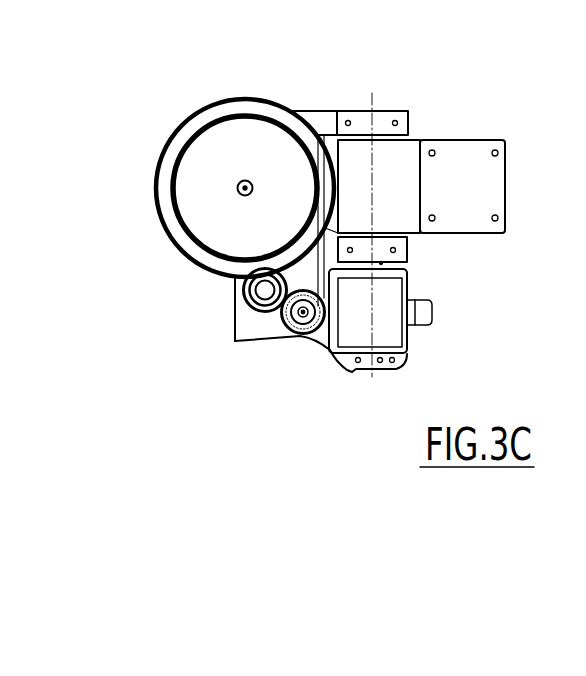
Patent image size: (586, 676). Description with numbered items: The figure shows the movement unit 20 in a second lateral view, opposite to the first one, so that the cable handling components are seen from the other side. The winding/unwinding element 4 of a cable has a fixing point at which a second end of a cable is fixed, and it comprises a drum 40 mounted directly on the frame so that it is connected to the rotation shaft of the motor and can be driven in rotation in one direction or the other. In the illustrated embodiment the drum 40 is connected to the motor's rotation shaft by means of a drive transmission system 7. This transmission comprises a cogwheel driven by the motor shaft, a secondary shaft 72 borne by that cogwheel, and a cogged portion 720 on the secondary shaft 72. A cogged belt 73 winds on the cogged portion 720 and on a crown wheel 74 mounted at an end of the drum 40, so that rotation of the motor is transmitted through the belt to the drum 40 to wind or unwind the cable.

The winding/unwinding element 4 is at (185, 98).
The drum 40 is at (212, 100).
The crown wheel 74 is at (273, 130).
The movement unit 20 is at (182, 277).
The drive transmission system 7 is at (271, 322).
The cogged portion 720 is at (290, 334).
The secondary shaft 72 is at (313, 339).
The cogged belt 73 is at (325, 256).